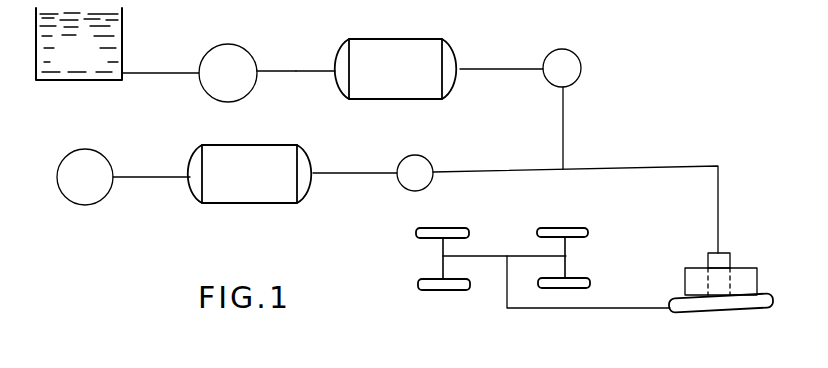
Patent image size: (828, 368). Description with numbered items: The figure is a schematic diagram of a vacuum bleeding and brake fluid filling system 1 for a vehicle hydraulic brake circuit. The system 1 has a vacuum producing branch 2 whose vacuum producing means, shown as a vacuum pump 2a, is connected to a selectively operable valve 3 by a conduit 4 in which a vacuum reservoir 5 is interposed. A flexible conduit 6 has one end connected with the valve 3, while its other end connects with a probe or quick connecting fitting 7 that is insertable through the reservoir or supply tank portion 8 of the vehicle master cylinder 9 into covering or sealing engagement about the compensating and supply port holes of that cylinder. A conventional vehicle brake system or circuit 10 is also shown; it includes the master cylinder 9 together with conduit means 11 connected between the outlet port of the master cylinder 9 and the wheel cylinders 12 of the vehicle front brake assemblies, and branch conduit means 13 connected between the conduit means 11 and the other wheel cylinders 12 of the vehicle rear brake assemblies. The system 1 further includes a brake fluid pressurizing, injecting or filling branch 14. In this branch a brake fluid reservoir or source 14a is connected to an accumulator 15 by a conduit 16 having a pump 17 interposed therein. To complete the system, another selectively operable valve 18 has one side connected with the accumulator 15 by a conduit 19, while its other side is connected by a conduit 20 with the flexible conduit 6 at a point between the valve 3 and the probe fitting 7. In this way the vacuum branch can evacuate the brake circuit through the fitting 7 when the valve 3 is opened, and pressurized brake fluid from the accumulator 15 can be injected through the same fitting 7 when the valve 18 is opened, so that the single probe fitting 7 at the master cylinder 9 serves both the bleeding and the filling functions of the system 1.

The vacuum bleeding and brake fluid filling system 1 is at (633, 126).
The vacuum producing branch 2 is at (177, 212).
The vacuum pump 2a is at (65, 200).
The selectively operable valve 3 is at (427, 159).
The conduit 4 is at (338, 172).
The vacuum reservoir 5 is at (195, 208).
The flexible conduit 6 is at (633, 172).
The probe or quick connecting fitting 7 is at (731, 260).
The reservoir or supply tank portion 8 is at (750, 285).
The vehicle master cylinder 9 is at (760, 307).
The vehicle brake system or circuit 10 is at (515, 277).
The conduit means 11 is at (484, 258).
The wheel cylinders 12 is at (432, 240).
The branch conduit means 13 is at (528, 233).
The brake fluid filling branch 14 is at (204, 102).
The brake fluid reservoir or source 14a is at (112, 45).
The accumulator 15 is at (390, 44).
The conduit 16 is at (293, 77).
The pump 17 is at (258, 53).
The selectively operable valve 18 is at (580, 62).
The conduit 19 is at (491, 70).
The conduit 20 is at (563, 126).